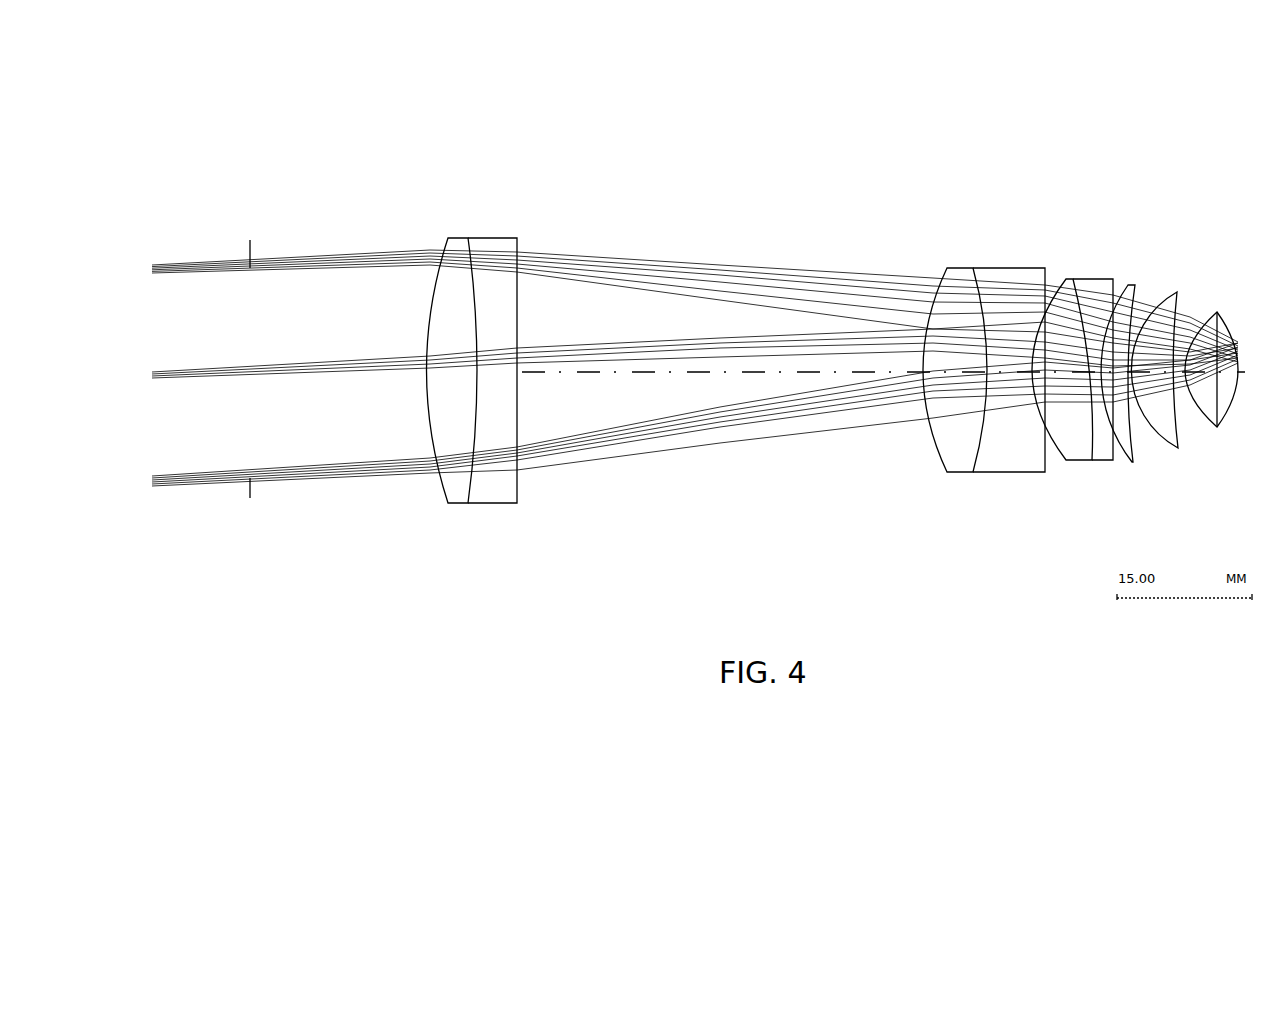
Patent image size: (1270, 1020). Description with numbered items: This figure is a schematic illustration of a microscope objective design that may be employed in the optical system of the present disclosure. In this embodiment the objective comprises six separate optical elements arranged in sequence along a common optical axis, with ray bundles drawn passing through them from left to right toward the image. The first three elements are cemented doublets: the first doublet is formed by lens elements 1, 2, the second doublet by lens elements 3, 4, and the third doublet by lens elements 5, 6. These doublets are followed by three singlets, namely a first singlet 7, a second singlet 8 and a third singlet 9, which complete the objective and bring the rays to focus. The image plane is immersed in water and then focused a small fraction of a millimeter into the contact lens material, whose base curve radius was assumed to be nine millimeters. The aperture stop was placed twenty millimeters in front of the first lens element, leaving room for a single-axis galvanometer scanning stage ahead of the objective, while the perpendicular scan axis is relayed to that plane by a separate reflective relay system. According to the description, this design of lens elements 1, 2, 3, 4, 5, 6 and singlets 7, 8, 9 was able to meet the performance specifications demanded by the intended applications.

The first doublet lens element 1 is at (459, 505).
The first doublet lens element 2 is at (492, 505).
The second doublet lens element 3 is at (960, 474).
The second doublet lens element 4 is at (1008, 474).
The third doublet lens element 5 is at (1072, 462).
The third doublet lens element 6 is at (1093, 462).
The first singlet 7 is at (1132, 463).
The second singlet 8 is at (1177, 449).
The third singlet 9 is at (1215, 428).